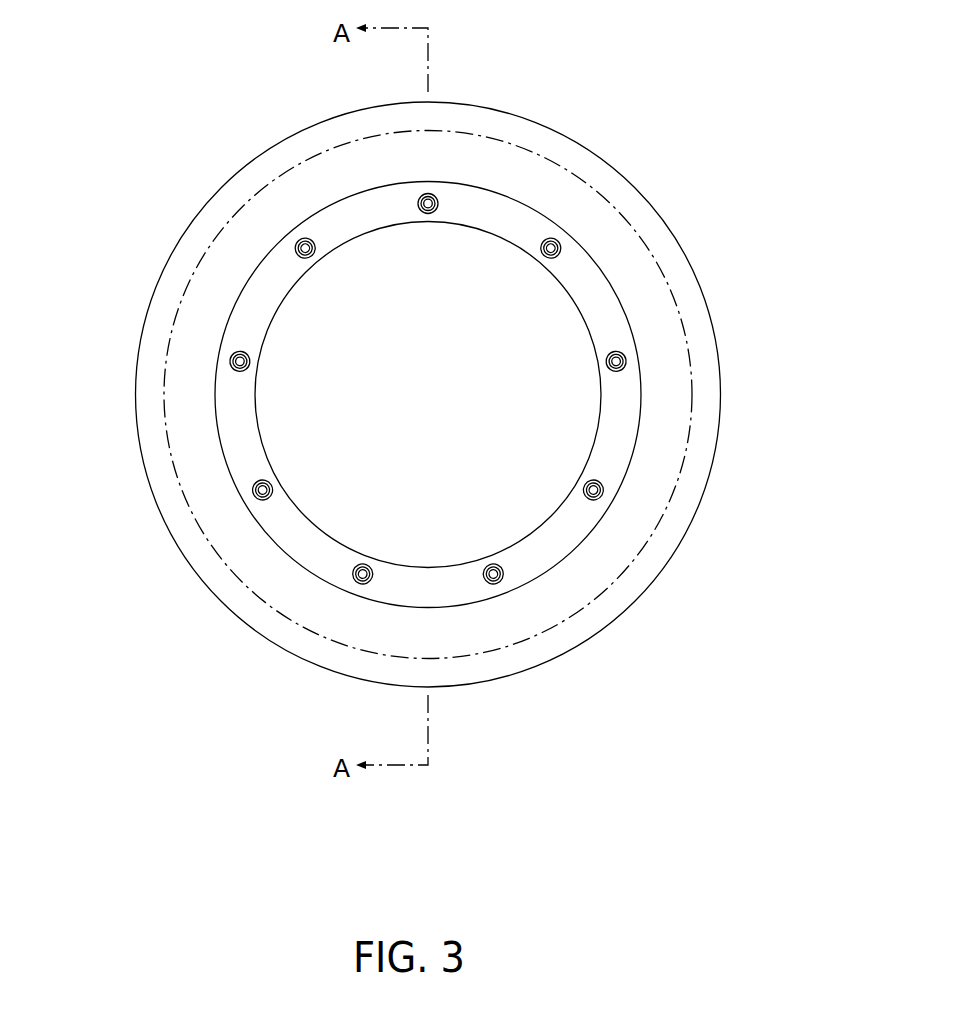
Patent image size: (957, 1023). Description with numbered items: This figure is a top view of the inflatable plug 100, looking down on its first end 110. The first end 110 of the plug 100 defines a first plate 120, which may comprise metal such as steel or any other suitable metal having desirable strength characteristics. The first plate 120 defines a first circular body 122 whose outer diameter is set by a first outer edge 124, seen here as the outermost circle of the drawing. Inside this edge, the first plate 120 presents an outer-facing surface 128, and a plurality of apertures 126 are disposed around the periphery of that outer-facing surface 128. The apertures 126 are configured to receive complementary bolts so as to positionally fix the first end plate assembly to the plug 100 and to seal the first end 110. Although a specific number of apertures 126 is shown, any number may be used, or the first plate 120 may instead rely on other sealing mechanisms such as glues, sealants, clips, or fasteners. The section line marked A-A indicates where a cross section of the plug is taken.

The inflatable plug 100 is at (655, 54).
The first end 110 is at (277, 645).
The first plate 120 is at (333, 146).
The first circular body 122 is at (288, 190).
The first outer edge 124 is at (223, 227).
The apertures 126 is at (624, 358).
The outer-facing surface 128 is at (250, 323).